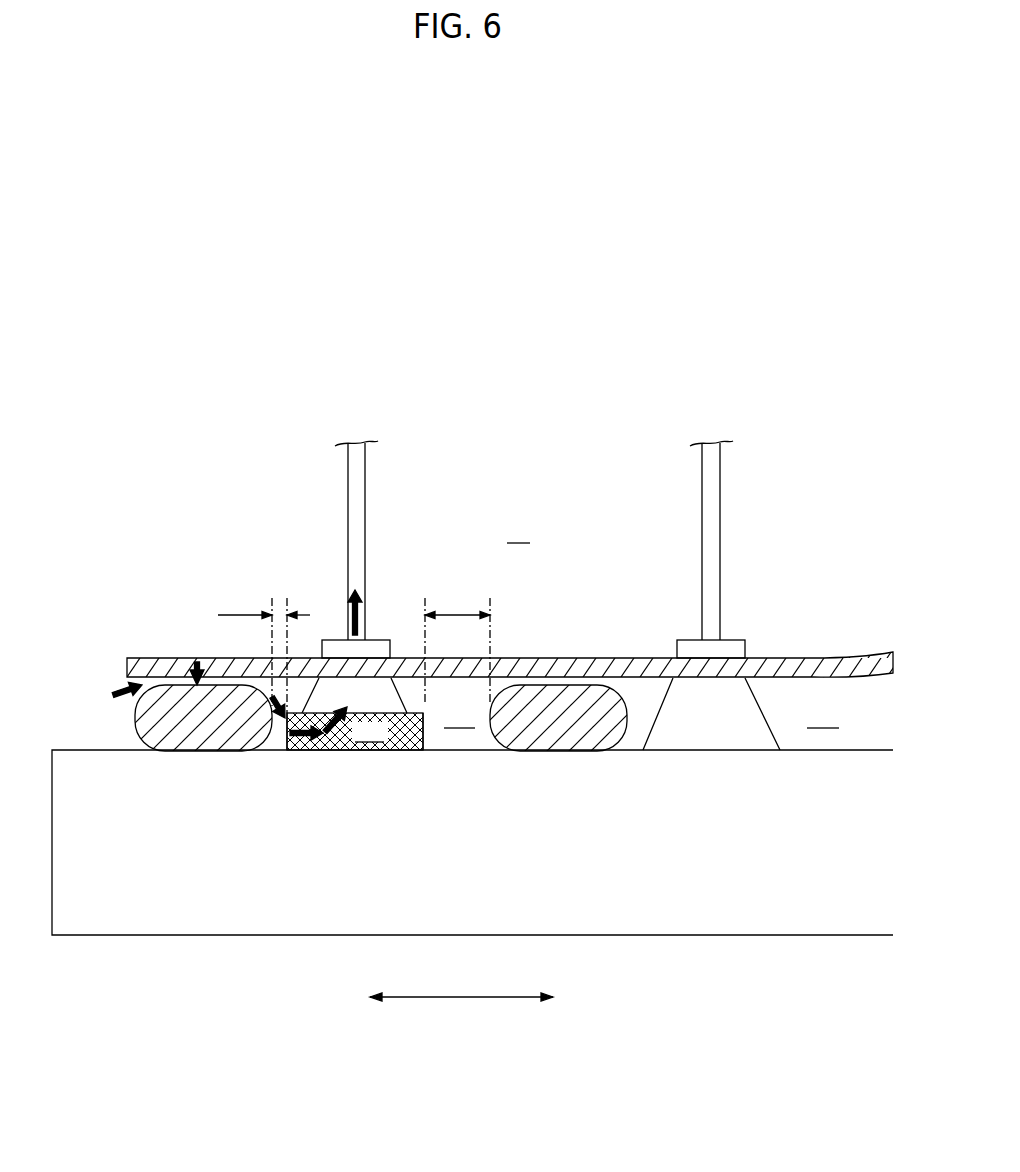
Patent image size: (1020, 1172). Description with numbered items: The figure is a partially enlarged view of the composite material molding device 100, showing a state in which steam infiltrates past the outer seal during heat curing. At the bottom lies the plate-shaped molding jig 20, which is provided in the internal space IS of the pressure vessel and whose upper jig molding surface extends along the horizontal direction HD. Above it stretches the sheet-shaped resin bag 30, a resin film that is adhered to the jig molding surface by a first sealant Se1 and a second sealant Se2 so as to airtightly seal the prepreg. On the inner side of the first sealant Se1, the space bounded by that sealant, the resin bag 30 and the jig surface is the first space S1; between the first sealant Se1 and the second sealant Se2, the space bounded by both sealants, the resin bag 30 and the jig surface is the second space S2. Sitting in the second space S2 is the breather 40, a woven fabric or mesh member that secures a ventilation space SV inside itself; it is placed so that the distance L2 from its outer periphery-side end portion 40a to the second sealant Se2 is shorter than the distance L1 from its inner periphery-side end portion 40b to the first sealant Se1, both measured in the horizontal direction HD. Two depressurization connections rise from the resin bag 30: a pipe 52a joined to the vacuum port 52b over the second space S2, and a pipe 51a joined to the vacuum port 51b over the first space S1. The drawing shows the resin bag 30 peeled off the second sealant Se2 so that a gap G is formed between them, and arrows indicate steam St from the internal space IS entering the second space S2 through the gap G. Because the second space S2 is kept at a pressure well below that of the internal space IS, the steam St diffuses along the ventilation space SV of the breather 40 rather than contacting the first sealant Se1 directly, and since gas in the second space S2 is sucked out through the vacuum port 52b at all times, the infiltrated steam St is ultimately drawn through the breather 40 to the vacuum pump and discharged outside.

The composite material molding device 100 is at (775, 390).
The molding jig 20 is at (766, 922).
The resin bag 30 is at (585, 670).
The breather 40 is at (400, 752).
The outer periphery-side end portion 40a is at (277, 752).
The inner periphery-side end portion 40b is at (422, 735).
The pipe 51a is at (722, 503).
The vacuum port 51b is at (692, 643).
The pipe 52a is at (348, 508).
The vacuum port 52b is at (383, 642).
The first sealant Se1 is at (560, 742).
The second sealant Se2 is at (177, 752).
The ventilation space SV is at (329, 720).
The internal space IS is at (518, 528).
The first space S1 is at (823, 713).
The second space S2 is at (459, 713).
The gap G is at (197, 662).
The steam St is at (113, 690).
The distance L1 is at (457, 644).
The distance L2 is at (264, 648).
The horizontal direction HD is at (461, 1014).